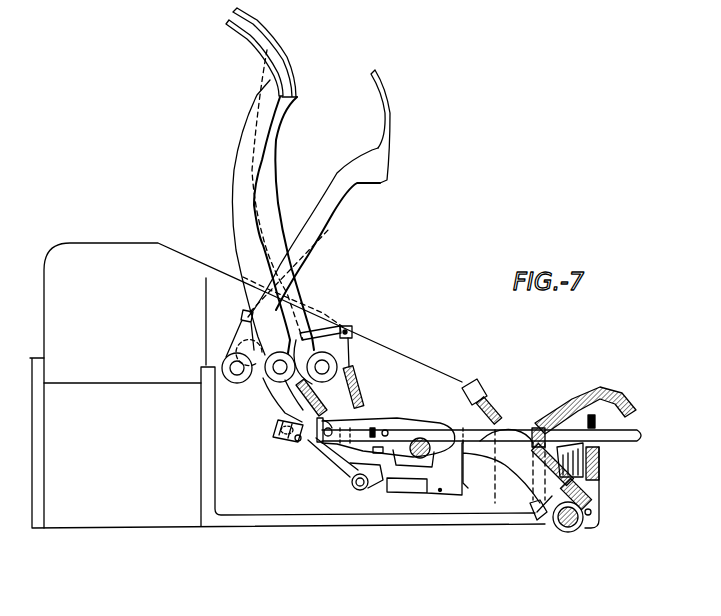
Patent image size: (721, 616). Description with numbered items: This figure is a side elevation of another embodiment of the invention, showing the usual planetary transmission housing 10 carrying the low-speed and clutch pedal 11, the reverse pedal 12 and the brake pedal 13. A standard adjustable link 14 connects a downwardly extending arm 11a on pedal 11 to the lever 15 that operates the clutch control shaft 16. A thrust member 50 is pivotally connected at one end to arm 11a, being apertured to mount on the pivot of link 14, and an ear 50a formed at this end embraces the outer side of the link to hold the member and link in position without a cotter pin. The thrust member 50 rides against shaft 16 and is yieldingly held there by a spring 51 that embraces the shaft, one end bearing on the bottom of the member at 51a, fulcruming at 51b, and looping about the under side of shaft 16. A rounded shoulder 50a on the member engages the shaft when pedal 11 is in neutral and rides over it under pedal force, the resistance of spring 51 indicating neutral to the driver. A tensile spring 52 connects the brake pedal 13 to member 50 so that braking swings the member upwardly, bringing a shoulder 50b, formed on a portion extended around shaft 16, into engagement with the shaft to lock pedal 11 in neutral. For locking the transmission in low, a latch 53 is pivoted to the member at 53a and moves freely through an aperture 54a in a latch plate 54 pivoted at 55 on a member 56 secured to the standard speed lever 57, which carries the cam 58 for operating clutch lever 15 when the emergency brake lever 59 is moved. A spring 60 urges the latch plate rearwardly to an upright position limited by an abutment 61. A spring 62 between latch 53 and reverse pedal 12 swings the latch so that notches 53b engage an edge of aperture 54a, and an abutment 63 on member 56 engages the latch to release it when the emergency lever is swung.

The housing 10 is at (107, 251).
The low-speed and clutch pedal 11 is at (245, 155).
The arm 11a is at (283, 398).
The reverse pedal 12 is at (325, 220).
The brake pedal 13 is at (270, 185).
The adjustable link 14 is at (297, 445).
The lever 15 is at (369, 484).
The clutch control shaft 16 is at (409, 453).
The thrust member 50 is at (332, 428).
The ear 50a is at (298, 438).
The shoulder 50b is at (441, 489).
The spring 51 is at (433, 425).
The spring end 51a is at (309, 446).
The fulcrum 51b is at (368, 424).
The tensile spring 52 is at (368, 378).
The latch 53 is at (500, 416).
The pivot 53a is at (373, 450).
The notches 53b is at (570, 460).
The latch plate 54 is at (610, 452).
The aperture 54a is at (598, 425).
The pivot 55 is at (592, 512).
The member 56 is at (590, 497).
The speed lever 57 is at (531, 486).
The cam 58 is at (469, 469).
The emergency brake lever 59 is at (563, 531).
The spring 60 is at (584, 482).
The abutment 61 is at (588, 530).
The spring 62 is at (311, 397).
The abutment 63 is at (530, 442).